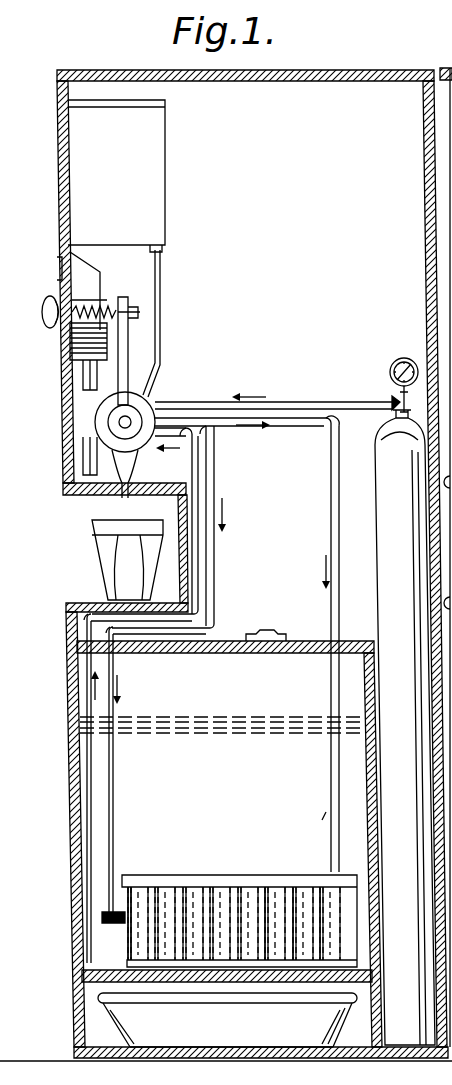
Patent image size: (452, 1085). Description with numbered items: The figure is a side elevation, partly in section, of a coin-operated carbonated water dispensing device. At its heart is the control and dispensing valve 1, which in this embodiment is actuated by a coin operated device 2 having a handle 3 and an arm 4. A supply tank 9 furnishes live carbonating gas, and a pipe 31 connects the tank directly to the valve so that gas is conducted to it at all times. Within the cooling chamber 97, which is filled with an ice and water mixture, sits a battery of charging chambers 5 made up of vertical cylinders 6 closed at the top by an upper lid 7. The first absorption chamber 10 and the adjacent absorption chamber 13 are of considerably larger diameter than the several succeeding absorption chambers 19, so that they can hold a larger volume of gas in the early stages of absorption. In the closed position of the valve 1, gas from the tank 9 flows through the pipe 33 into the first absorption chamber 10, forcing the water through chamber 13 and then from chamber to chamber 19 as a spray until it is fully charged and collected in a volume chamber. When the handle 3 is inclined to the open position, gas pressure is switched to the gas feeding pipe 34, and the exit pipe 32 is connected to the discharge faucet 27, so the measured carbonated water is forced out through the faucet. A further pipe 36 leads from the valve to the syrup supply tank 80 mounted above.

The control and dispensing valve 1 is at (140, 405).
The coin operated device 2 is at (88, 278).
The handle 3 is at (44, 312).
The arm 4 is at (123, 343).
The battery of charging chambers 5 is at (246, 876).
The vertical cylinders 6 is at (232, 905).
The upper lid 7 is at (135, 875).
The supply tank 9 is at (405, 727).
The first absorption chamber 10 is at (332, 923).
The adjacent absorption chamber 13 is at (298, 923).
The absorption chamber 19 is at (267, 923).
The discharge faucet 27 is at (136, 467).
The pipe 31 is at (310, 402).
The exit pipe 32 is at (88, 823).
The pipe 33 is at (295, 430).
The gas feeding pipe 34 is at (110, 798).
The pipe 36 is at (160, 338).
The syrup supply tank 80 is at (150, 190).
The cooling chamber 97 is at (286, 732).